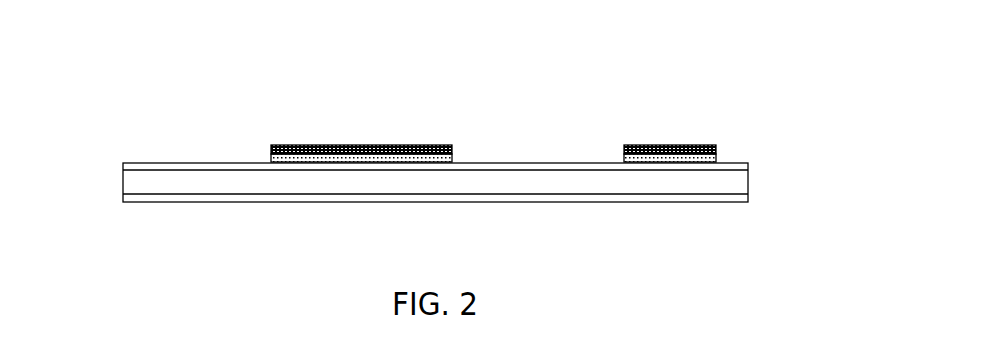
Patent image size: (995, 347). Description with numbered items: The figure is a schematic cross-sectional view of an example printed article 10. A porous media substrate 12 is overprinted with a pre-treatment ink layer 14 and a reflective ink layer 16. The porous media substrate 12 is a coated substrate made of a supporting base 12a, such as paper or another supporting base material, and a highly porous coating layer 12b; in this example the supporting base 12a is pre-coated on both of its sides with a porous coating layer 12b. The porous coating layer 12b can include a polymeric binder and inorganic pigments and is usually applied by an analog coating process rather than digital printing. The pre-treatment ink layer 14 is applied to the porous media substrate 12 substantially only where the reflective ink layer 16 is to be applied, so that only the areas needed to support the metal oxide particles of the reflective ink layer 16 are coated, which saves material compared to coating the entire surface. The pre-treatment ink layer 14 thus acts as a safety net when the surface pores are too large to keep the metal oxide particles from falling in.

The printed article 10 is at (142, 92).
The porous media substrate 12 is at (112, 163).
The supporting base 12a is at (732, 182).
The porous coating layer 12b is at (550, 167).
The pre-treatment ink layer 14 is at (303, 155).
The reflective ink layer 16 is at (403, 145).